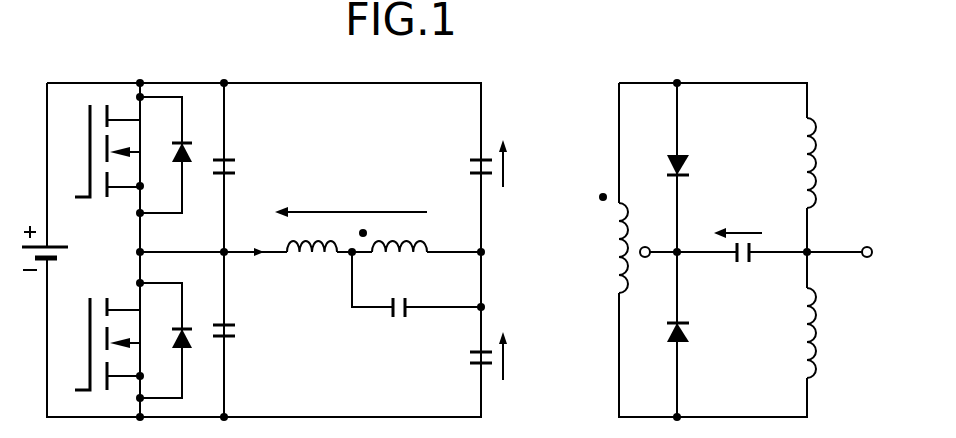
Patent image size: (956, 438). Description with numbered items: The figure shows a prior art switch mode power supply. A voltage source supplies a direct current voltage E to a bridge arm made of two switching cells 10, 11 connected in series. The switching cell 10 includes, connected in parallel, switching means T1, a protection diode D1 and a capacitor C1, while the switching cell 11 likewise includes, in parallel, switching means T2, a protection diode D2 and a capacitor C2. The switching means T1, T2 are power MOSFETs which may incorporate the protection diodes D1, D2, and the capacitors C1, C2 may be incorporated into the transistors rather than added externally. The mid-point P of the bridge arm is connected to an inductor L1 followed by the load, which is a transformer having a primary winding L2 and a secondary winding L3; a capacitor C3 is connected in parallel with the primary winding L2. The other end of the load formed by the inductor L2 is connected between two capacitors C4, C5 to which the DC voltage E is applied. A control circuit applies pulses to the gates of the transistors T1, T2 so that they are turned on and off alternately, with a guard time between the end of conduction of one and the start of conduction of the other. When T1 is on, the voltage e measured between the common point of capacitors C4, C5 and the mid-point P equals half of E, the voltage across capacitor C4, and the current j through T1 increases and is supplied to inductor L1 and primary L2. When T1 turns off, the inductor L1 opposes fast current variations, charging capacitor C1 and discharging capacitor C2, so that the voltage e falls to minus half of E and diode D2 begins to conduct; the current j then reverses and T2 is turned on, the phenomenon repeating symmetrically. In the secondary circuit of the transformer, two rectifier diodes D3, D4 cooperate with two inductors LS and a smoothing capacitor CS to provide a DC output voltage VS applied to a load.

The direct current voltage E is at (62, 247).
The switching means T1 is at (88, 148).
The switching means T2 is at (88, 352).
The protection diode D1 is at (190, 160).
The protection diode D2 is at (186, 350).
The rectifier diode D3 is at (690, 168).
The rectifier diode D4 is at (690, 335).
The capacitor C1 is at (236, 158).
The capacitor C2 is at (236, 338).
The capacitor C3 is at (392, 318).
The capacitor C4 is at (468, 176).
The capacitor C5 is at (468, 366).
The smoothing capacitor CS is at (740, 266).
The inductor L1 is at (308, 262).
The primary winding L2 is at (425, 240).
The secondary winding L3 is at (607, 268).
The inductors LS is at (818, 185).
The switching cell 10 is at (238, 131).
The switching cell 11 is at (242, 371).
The mid-point P is at (129, 248).
The current j is at (252, 237).
The voltage e is at (351, 198).
The DC output voltage VS is at (738, 218).